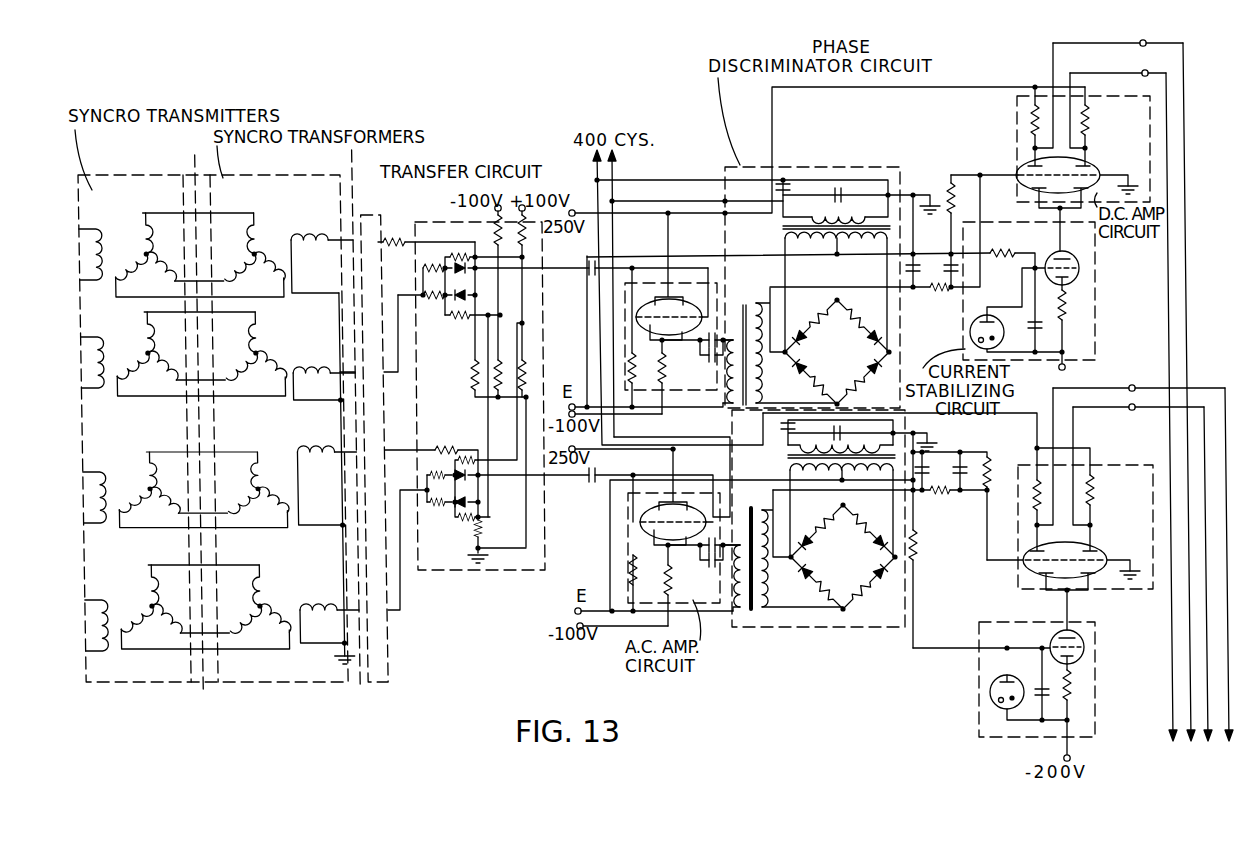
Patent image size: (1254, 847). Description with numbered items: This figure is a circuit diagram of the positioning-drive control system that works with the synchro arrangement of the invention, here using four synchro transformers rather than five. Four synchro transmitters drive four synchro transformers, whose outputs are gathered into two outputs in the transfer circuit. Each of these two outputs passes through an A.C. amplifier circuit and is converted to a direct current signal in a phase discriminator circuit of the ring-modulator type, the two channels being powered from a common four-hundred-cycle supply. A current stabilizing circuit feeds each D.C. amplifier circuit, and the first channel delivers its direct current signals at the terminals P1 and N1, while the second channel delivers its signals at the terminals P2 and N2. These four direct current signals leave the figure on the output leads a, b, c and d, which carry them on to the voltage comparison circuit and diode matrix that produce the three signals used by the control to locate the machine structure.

The positive direct current output signal of the first phase discriminator and D.C. P1 is at (1118, 32).
The negative direct current output signal of the first phase discriminator and D.C. N1 is at (1118, 63).
The positive direct current output signal of the second phase discriminator and D.C. P2 is at (1139, 377).
The negative direct current output signal of the second phase discriminator and D.C. N2 is at (1138, 415).
The output lead a is at (1172, 419).
The output lead b is at (1190, 404).
The output lead c is at (1207, 586).
The output lead d is at (1229, 577).